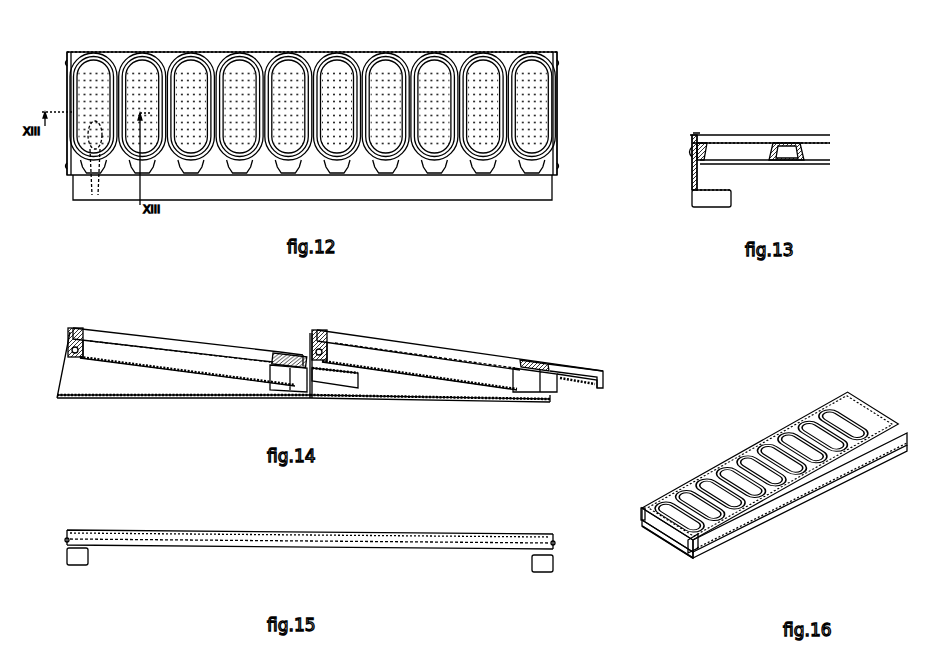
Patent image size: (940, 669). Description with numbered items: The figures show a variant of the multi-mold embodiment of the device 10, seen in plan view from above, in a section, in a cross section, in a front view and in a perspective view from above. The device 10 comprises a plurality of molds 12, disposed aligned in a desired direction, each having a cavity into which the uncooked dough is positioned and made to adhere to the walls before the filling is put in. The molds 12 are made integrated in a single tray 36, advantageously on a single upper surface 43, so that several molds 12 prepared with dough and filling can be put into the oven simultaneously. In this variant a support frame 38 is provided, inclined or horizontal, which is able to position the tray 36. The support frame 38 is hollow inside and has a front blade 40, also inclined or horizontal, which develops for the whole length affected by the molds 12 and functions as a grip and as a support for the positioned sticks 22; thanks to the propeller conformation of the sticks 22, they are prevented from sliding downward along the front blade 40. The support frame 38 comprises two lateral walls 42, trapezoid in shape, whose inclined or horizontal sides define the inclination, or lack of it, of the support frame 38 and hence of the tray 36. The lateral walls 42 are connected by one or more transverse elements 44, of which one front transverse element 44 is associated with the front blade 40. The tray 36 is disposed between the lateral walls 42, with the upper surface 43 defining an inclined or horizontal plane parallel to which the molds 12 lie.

In FIG. 14, the device 10 is at (176, 338).
In FIG. 13, the mold 12 is at (740, 145).
In FIG. 16, the mold 12 is at (762, 471).
In FIG. 12, the stick 22 is at (92, 192).
In FIG. 14, the stick 22 is at (226, 356).
In FIG. 12, the tray 36 is at (312, 96).
In FIG. 13, the tray 36 is at (764, 165).
In FIG. 14, the tray 36 is at (117, 365).
In FIG. 16, the tray 36 is at (770, 460).
In FIG. 13, the support frame 38 is at (692, 181).
In FIG. 14, the support frame 38 is at (68, 340).
In FIG. 15, the support frame 38 is at (252, 551).
In FIG. 16, the support frame 38 is at (662, 544).
In FIG. 12, the front blade 40 is at (410, 190).
In FIG. 14, the front blade 40 is at (336, 380).
In FIG. 16, the front blade 40 is at (877, 451).
In FIG. 12, the lateral wall 42 is at (73, 63).
In FIG. 14, the lateral wall 42 is at (90, 385).
In FIG. 15, the lateral wall 42 is at (66, 541).
In FIG. 16, the lateral wall 42 is at (647, 522).
In FIG. 12, the upper surface 43 is at (218, 60).
In FIG. 16, the upper surface 43 is at (761, 470).
In FIG. 16, the transverse element 44 is at (642, 512).